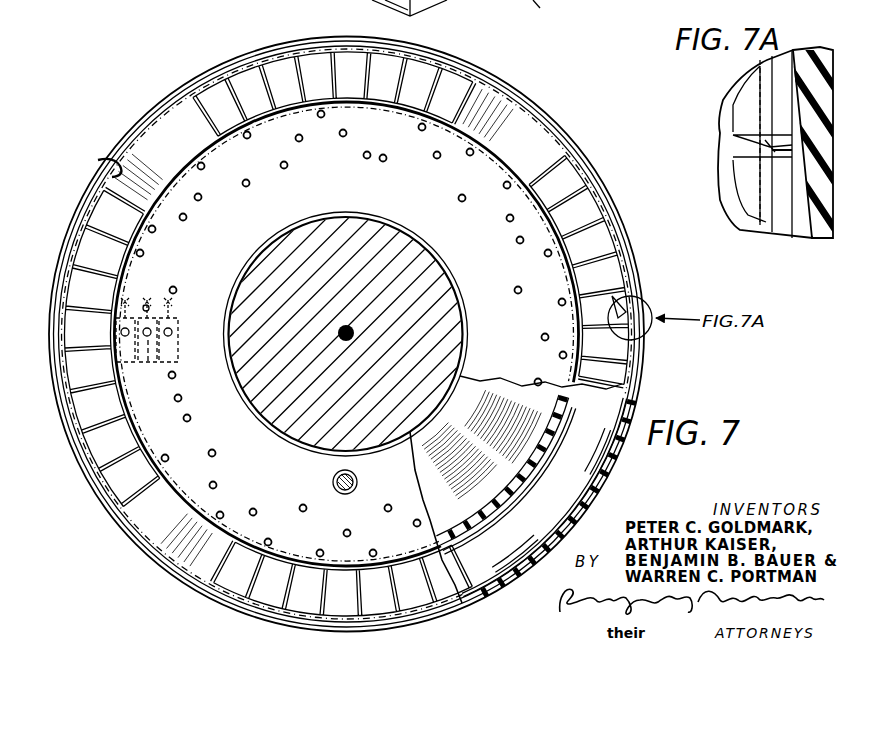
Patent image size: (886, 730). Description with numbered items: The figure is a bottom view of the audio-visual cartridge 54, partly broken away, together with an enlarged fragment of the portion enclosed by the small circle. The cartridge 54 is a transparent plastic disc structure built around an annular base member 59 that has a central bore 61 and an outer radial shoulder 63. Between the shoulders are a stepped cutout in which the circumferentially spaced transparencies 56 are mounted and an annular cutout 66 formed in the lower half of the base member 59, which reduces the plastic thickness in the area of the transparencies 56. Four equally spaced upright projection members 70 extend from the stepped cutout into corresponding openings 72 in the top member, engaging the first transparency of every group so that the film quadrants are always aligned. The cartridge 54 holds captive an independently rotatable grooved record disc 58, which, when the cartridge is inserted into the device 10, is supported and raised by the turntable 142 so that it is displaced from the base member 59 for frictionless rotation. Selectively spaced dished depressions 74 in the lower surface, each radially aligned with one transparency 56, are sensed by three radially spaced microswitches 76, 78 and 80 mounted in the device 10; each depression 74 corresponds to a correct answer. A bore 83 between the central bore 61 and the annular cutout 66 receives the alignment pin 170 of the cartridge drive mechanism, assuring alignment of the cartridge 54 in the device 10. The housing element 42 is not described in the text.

In FIG. 7, the audio-visual device 10 is at (548, 13).
In FIG. 7, the housing 42 is at (387, 10).
In FIG. 7, the audio-visual cartridge 54 is at (100, 514).
In FIG. 7, the transparencies 56 is at (214, 98).
In FIG. 7A, the transparencies 56 is at (744, 104).
In FIG. 7, the grooved record disc 58 is at (521, 489).
In FIG. 7, the annular base member 59 is at (552, 118).
In FIG. 7, the central bore 61 is at (462, 345).
In FIG. 7, the outer radial shoulder 63 is at (142, 126).
In FIG. 7A, the outer radial shoulder 63 is at (818, 62).
In FIG. 7, the annular cutout 66 is at (91, 162).
In FIG. 7, the upright projection members 70 is at (58, 352).
In FIG. 7A, the upright projection members 70 is at (766, 148).
In FIG. 7A, the openings 72 is at (786, 153).
In FIG. 7, the depressions 74 is at (321, 118).
In FIG. 7, the microswitch 76 is at (128, 362).
In FIG. 7, the microswitch 78 is at (150, 364).
In FIG. 7, the microswitch 80 is at (178, 347).
In FIG. 7, the bore 83 is at (357, 482).
In FIG. 7, the turntable 142 is at (242, 271).
In FIG. 7, the alignment pin 170 is at (333, 482).